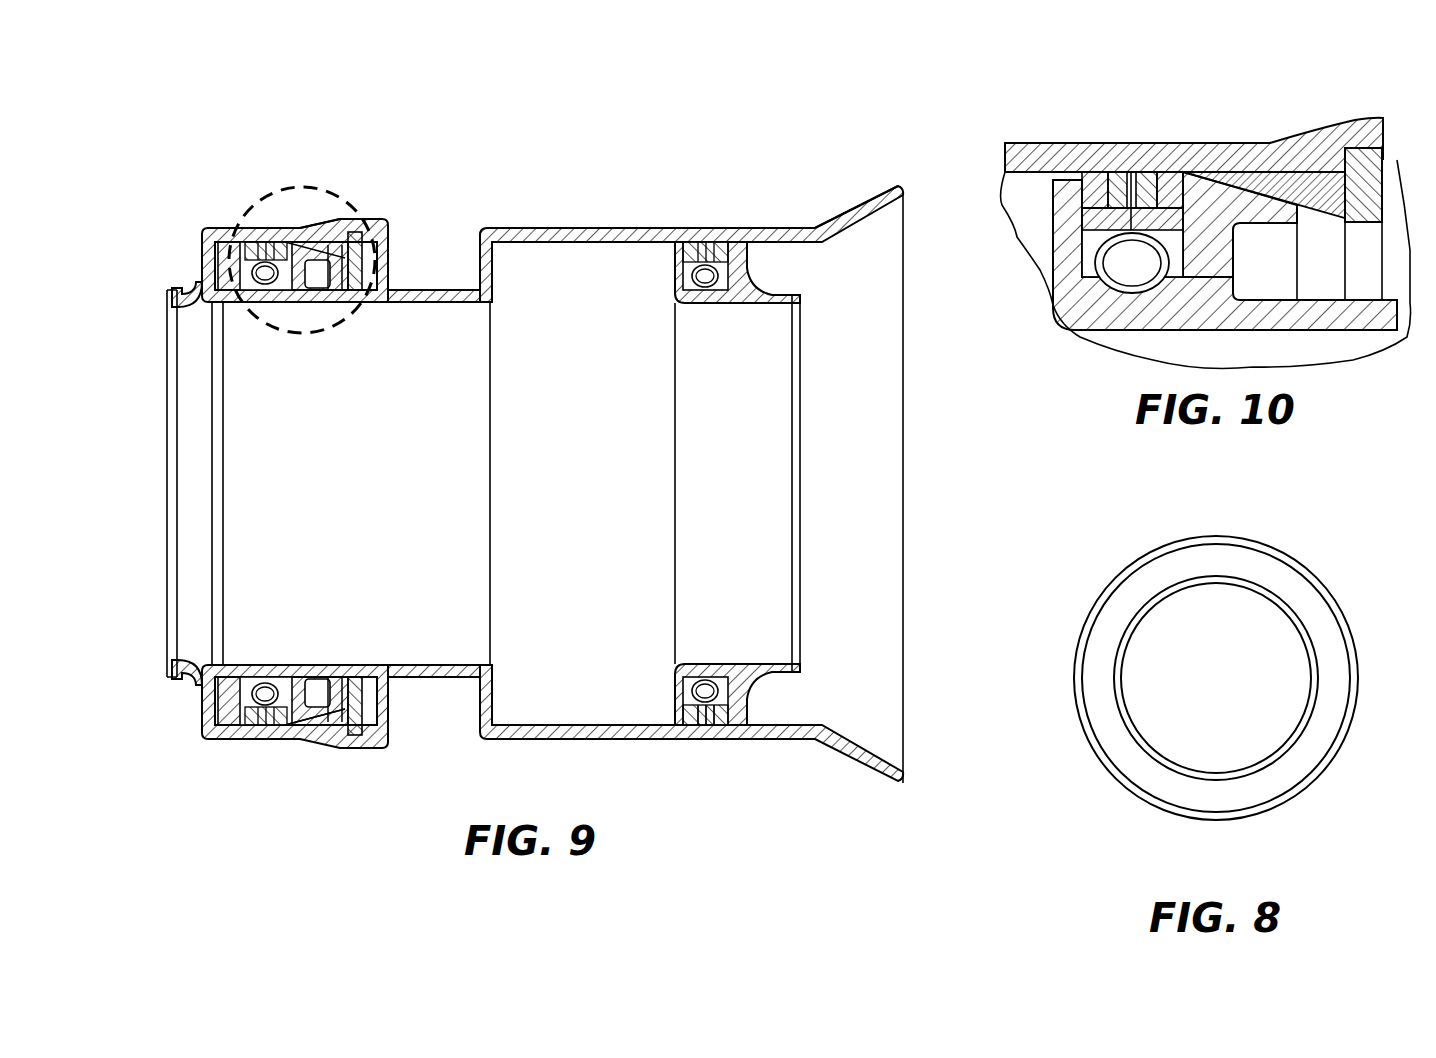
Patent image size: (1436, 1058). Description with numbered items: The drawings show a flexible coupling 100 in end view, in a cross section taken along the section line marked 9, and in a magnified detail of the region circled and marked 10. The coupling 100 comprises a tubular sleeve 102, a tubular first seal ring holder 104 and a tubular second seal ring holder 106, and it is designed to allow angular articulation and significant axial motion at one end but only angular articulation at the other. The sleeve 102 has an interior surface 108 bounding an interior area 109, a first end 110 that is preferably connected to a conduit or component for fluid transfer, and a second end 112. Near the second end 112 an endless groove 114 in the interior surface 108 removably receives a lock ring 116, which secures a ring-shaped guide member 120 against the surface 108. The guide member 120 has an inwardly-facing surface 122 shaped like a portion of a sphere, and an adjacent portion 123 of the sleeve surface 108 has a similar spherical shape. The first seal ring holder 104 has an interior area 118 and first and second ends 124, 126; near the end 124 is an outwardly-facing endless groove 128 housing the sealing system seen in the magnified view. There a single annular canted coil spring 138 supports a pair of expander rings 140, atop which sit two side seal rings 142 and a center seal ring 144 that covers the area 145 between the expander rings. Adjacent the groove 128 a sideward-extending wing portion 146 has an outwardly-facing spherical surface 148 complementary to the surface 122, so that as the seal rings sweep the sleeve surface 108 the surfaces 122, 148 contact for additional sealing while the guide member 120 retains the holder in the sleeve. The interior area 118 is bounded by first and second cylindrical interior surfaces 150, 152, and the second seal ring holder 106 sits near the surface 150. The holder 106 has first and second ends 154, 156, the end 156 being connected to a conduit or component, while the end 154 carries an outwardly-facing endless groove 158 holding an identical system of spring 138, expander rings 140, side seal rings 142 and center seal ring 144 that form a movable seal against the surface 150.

In FIG. 8, the section line 9- 9 is at (1214, 522).
In FIG. 9, the detail area of FIG. 10 is at (298, 183).
In FIG. 9, the flexible coupling 100 is at (258, 150).
In FIG. 8, the flexible coupling 100 is at (1120, 552).
In FIG. 9, the tubular sleeve 102 is at (186, 228).
In FIG. 8, the tubular sleeve 102 is at (1340, 670).
In FIG. 10, the tubular sleeve 102 is at (1008, 160).
In FIG. 9, the first seal ring holder 104 is at (550, 230).
In FIG. 10, the first seal ring holder 104 is at (1326, 335).
In FIG. 9, the second seal ring holder 106 is at (792, 263).
In FIG. 9, the interior surface 108 is at (300, 742).
In FIG. 10, the interior surface 108 is at (1220, 173).
In FIG. 9, the interior area 109 is at (200, 350).
In FIG. 9, the first end 110 is at (165, 680).
In FIG. 9, the second end 112 is at (390, 228).
In FIG. 10, the second end 112 is at (1393, 160).
In FIG. 9, the endless groove 114 is at (365, 242).
In FIG. 9, the lock ring 116 is at (357, 742).
In FIG. 10, the lock ring 116 is at (1362, 158).
In FIG. 9, the interior area 118 is at (865, 496).
In FIG. 9, the guide member 120 is at (340, 262).
In FIG. 10, the guide member 120 is at (1300, 185).
In FIG. 9, the inwardly-facing surface 122 is at (342, 735).
In FIG. 9, the portion 123 is at (226, 722).
In FIG. 10, the portion 123 is at (1075, 178).
In FIG. 9, the first end 124 is at (235, 680).
In FIG. 9, the second end 126 is at (903, 190).
In FIG. 10, the second end 126 is at (990, 150).
In FIG. 9, the outwardly-facing endless groove 128 is at (240, 300).
In FIG. 10, the outwardly-facing endless groove 128 is at (1090, 240).
In FIG. 9, the canted coil spring 138 is at (720, 690).
In FIG. 10, the canted coil spring 138 is at (1095, 262).
In FIG. 9, the expander rings 140 is at (690, 712).
In FIG. 10, the expander rings 140 is at (1085, 190).
In FIG. 9, the side seal rings 142 is at (698, 745).
In FIG. 10, the side seal rings 142 is at (1110, 190).
In FIG. 9, the center seal ring 144 is at (708, 745).
In FIG. 10, the center seal ring 144 is at (1131, 195).
In FIG. 10, the area 145 is at (1131, 215).
In FIG. 9, the wing portion 146 is at (312, 720).
In FIG. 9, the outwardly-facing surface 148 is at (320, 738).
In FIG. 9, the first cylindrical interior surface 150 is at (552, 243).
In FIG. 9, the second cylindrical interior surface 152 is at (418, 303).
In FIG. 9, the first end 154 is at (678, 692).
In FIG. 9, the second end 156 is at (801, 297).
In FIG. 9, the outwardly-facing endless groove 158 is at (718, 282).